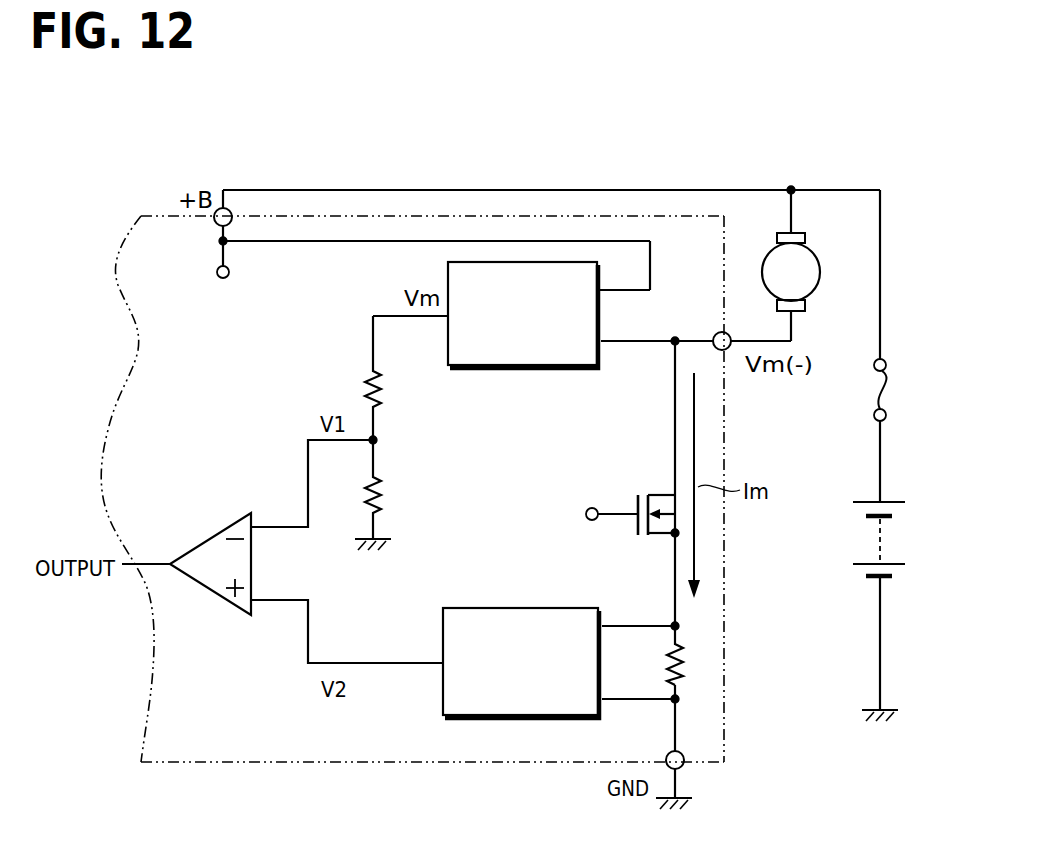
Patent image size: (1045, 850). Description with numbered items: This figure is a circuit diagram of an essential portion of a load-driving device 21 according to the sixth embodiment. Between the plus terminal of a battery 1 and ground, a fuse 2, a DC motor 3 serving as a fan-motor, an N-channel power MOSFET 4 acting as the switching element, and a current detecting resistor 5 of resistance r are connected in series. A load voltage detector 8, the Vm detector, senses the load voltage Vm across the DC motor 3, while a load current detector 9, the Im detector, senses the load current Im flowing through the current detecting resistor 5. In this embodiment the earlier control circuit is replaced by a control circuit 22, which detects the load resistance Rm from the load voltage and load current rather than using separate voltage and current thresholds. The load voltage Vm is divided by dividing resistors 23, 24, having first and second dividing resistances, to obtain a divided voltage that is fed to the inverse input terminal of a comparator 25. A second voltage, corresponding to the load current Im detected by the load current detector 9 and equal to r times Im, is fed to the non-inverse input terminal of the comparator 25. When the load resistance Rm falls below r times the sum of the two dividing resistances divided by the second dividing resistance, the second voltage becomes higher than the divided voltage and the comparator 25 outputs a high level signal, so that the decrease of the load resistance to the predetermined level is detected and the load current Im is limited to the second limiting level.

The battery 1 is at (896, 545).
The fuse 2 is at (891, 387).
The DC motor 3 is at (820, 277).
The N-channel power MOSFET 4 is at (660, 487).
The current detecting resistor 5 is at (685, 655).
The load voltage detector 8 is at (602, 318).
The load current detector 9 is at (528, 606).
The load-driving device 21 is at (433, 489).
The control circuit 22 is at (282, 548).
The dividing resistor 23 is at (360, 380).
The dividing resistor 24 is at (360, 488).
The comparator 25 is at (213, 593).